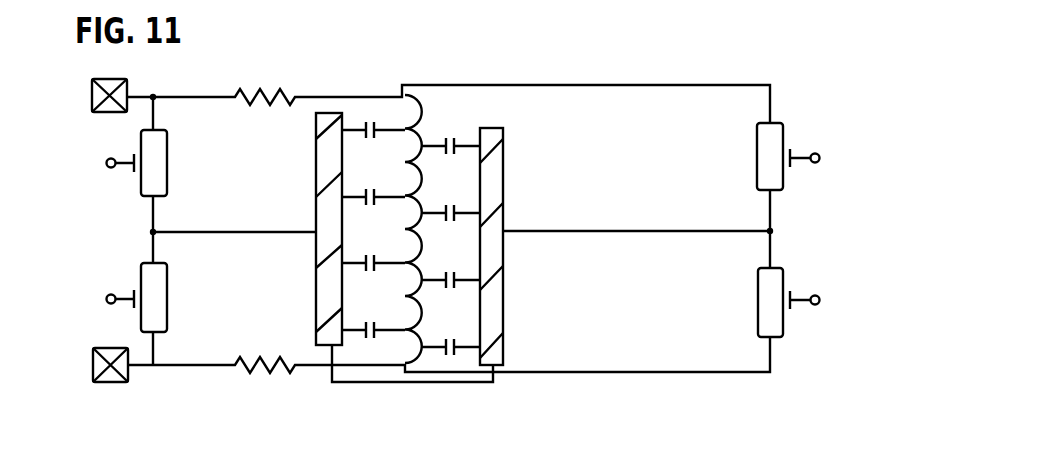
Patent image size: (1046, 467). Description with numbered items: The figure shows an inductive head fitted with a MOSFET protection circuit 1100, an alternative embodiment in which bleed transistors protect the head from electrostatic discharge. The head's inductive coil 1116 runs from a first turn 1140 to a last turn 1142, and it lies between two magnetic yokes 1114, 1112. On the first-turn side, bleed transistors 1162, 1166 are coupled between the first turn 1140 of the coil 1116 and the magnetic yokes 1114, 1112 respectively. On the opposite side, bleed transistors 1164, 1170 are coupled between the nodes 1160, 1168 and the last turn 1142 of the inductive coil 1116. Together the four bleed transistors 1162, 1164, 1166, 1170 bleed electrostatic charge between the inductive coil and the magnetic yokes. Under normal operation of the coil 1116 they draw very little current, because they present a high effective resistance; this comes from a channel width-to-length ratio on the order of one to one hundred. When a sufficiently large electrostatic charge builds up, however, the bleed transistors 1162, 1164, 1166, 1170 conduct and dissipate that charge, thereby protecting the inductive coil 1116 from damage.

The MOSFET protection circuit 1100 is at (372, 52).
The magnetic yoke 1112 is at (498, 167).
The magnetic yoke 1114 is at (320, 192).
The inductive coil 1116 is at (392, 373).
The first turn 1140 is at (184, 97).
The last turn 1142 is at (203, 367).
The node 1160 is at (143, 232).
The bleed transistor 1162 is at (68, 158).
The bleed transistor 1164 is at (62, 307).
The bleed transistor 1166 is at (786, 121).
The node 1168 is at (778, 232).
The bleed transistor 1170 is at (785, 340).